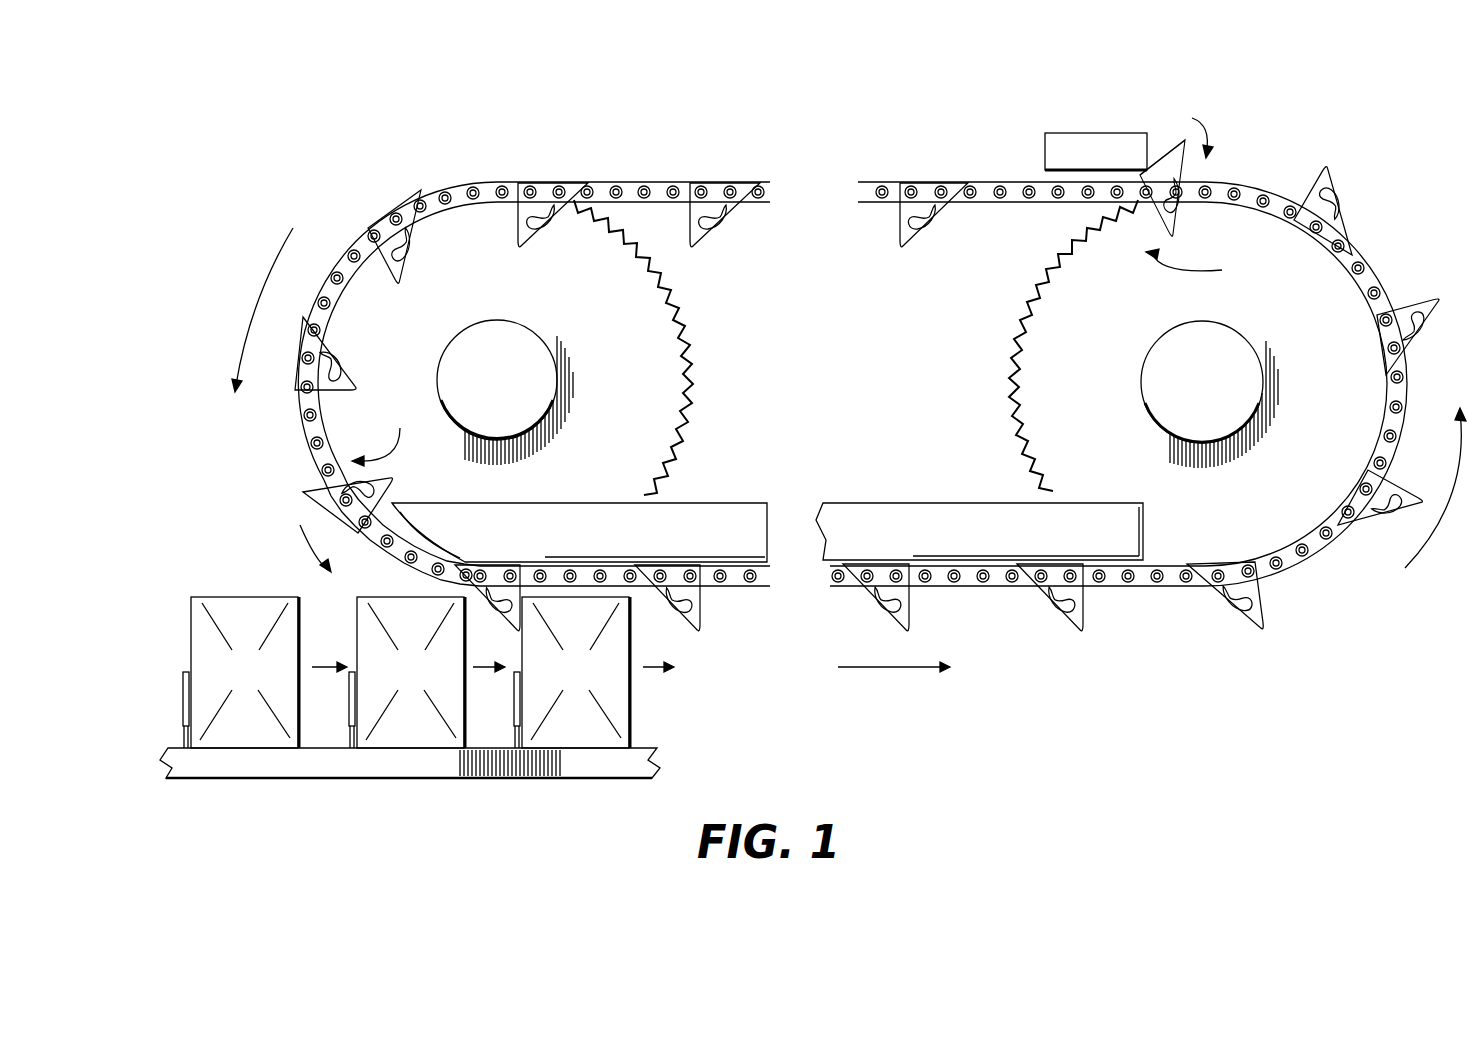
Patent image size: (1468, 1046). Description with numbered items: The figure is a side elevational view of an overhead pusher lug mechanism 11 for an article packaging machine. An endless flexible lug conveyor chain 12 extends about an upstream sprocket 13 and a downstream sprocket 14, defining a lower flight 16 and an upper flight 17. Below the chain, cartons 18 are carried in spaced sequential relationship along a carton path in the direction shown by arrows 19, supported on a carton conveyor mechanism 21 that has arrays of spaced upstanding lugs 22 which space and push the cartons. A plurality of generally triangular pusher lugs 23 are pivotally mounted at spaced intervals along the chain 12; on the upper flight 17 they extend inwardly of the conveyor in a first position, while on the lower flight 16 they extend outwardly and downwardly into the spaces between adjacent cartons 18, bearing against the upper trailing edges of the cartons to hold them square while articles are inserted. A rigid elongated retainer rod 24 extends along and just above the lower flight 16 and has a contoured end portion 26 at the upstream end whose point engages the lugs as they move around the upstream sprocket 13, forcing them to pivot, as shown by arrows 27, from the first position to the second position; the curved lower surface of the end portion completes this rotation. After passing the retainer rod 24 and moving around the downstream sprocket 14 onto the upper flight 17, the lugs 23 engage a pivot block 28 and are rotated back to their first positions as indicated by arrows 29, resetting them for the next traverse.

The overhead pusher lug mechanism 11 is at (352, 172).
The endless flexible lug conveyor chain 12 is at (618, 152).
The upstream sprocket 13 is at (650, 350).
The downstream sprocket 14 is at (1043, 312).
The lower flight 16 is at (997, 578).
The upper flight 17 is at (1012, 190).
The cartons 18 is at (202, 640).
The arrows 19 is at (313, 668).
The carton conveyor mechanism 21 is at (405, 762).
The upstanding lugs 22 is at (183, 698).
The pusher lugs 23 is at (748, 186).
The retainer rod 24 is at (703, 513).
The contoured end portion 26 is at (428, 522).
The arrows 27 is at (303, 548).
The pivot block 28 is at (1102, 145).
The arrows 29 is at (1199, 191).